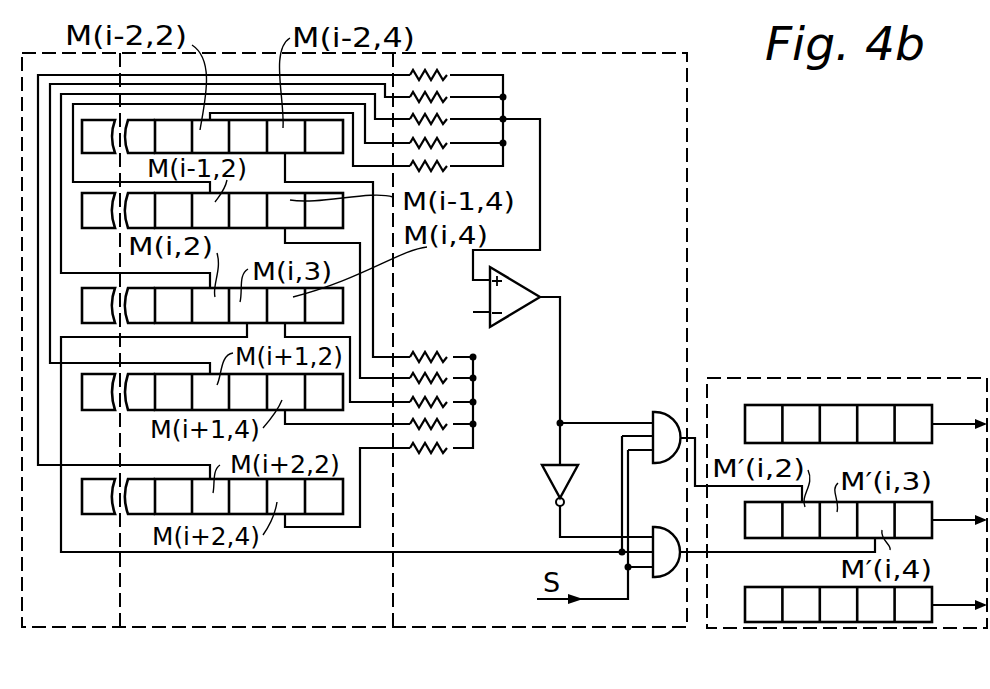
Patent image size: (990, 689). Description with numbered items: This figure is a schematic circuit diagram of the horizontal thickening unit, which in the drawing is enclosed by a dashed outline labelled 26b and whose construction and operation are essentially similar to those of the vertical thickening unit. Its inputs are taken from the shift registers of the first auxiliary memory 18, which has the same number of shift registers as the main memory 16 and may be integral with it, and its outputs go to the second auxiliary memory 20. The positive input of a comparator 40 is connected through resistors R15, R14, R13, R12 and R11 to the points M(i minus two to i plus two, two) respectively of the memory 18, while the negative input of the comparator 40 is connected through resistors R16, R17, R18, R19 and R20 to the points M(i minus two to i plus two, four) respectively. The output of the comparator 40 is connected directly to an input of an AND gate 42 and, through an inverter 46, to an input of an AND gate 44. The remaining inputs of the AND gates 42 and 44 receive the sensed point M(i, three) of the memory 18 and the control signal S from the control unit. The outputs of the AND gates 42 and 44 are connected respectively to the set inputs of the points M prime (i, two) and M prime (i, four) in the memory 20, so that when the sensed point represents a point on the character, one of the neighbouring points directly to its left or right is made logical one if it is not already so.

The main memory 16 is at (58, 603).
The first auxiliary memory 18 is at (275, 613).
The second auxiliary memory 20 is at (720, 617).
The filter circuit 26b is at (538, 618).
The comparator 40 is at (517, 298).
The AND gate 42 is at (662, 423).
The AND gate 44 is at (662, 537).
The inverter 46 is at (560, 477).
The resistor R11 is at (450, 85).
The resistor R12 is at (450, 108).
The resistor R13 is at (455, 130).
The resistor R14 is at (455, 155).
The resistor R15 is at (455, 178).
The resistor R16 is at (453, 351).
The resistor R17 is at (453, 373).
The resistor R18 is at (453, 408).
The resistor R19 is at (453, 430).
The resistor R20 is at (453, 454).